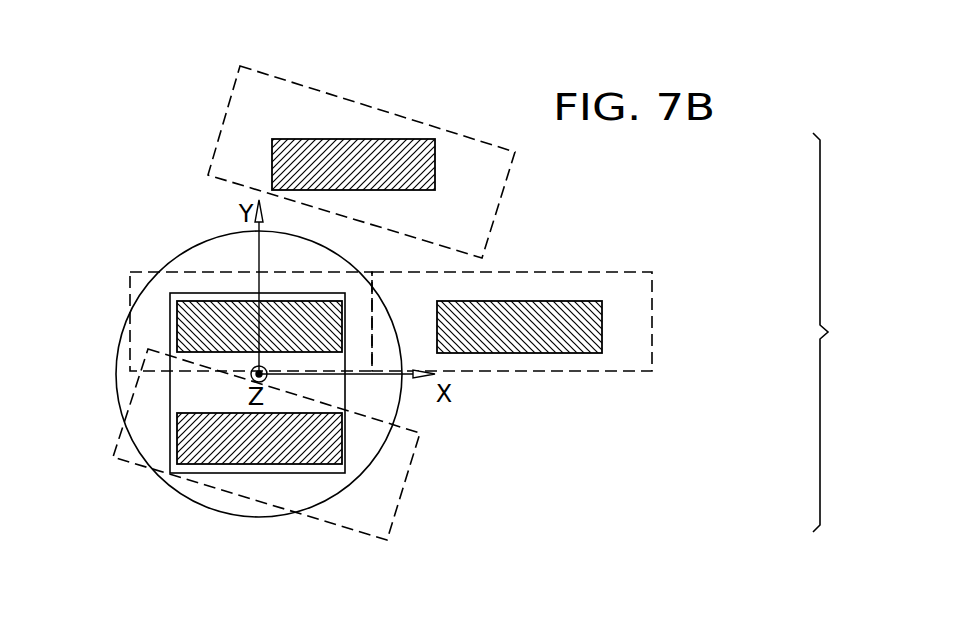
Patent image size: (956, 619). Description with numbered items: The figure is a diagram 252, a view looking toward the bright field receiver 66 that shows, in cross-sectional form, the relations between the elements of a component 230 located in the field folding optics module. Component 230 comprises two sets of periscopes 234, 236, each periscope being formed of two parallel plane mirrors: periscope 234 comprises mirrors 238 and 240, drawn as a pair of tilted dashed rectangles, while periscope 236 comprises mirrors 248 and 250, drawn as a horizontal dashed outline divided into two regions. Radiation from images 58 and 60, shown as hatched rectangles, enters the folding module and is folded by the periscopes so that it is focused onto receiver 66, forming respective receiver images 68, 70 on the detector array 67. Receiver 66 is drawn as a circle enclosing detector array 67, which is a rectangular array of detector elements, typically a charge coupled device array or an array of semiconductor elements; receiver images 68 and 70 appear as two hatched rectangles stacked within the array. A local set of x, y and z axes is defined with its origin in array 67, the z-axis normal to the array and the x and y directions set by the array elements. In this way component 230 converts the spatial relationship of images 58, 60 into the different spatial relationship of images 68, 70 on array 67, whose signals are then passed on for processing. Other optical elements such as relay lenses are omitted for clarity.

The periscope 234 is at (333, 133).
The mirror 238 is at (215, 150).
The image 60 is at (435, 172).
The periscope 236 is at (434, 317).
The mirror 250 is at (130, 283).
The mirror 248 is at (598, 371).
The image 58 is at (537, 353).
The component 230 is at (439, 405).
The mirror 240 is at (395, 517).
The bright field receiver 66 is at (274, 517).
The detector array 67 is at (207, 473).
The receiver image 68 is at (177, 328).
The receiver image 70 is at (177, 437).
The diagram 252 is at (841, 332).